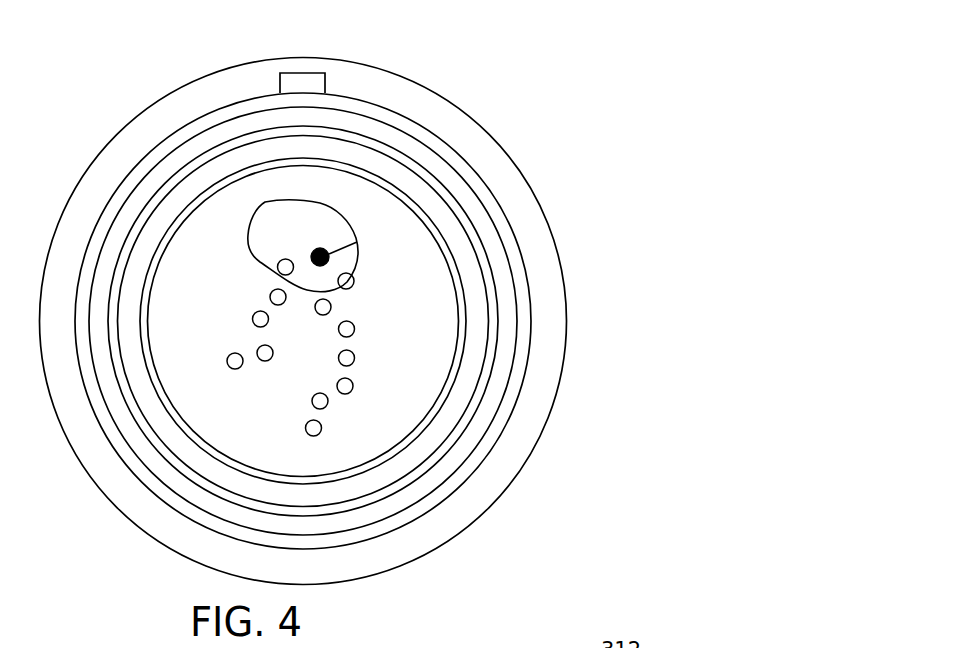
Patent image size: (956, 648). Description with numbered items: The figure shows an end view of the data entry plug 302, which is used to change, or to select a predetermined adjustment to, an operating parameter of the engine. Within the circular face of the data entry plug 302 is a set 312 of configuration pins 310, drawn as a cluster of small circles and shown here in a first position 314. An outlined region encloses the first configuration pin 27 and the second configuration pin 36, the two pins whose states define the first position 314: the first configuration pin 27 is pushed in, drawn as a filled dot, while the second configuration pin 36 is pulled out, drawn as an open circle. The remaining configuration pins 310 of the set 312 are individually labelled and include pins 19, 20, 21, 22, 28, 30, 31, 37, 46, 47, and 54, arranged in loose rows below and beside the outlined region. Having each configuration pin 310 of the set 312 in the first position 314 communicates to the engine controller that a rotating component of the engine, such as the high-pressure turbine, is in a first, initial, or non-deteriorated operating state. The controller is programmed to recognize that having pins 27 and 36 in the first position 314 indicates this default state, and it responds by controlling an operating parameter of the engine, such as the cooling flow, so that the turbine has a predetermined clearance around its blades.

The data entry plug 302 is at (524, 513).
The configuration pins 310 is at (357, 242).
The set of configuration pins 312 is at (311, 183).
The first position 314 is at (292, 238).
The pin 19 is at (365, 276).
The pin 20 is at (365, 333).
The pin 21 is at (364, 361).
The pin 22 is at (361, 389).
The first configuration pin 27 is at (324, 242).
The pin 28 is at (331, 307).
The pin 30 is at (320, 387).
The pin 31 is at (331, 429).
The second configuration pin 36 is at (274, 254).
The pin 37 is at (271, 294).
The pin 46 is at (246, 312).
The pin 47 is at (276, 365).
The pin 54 is at (220, 364).